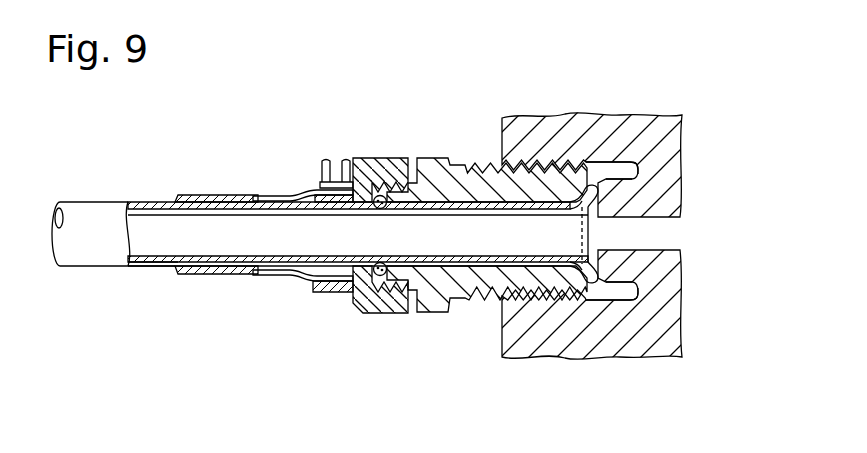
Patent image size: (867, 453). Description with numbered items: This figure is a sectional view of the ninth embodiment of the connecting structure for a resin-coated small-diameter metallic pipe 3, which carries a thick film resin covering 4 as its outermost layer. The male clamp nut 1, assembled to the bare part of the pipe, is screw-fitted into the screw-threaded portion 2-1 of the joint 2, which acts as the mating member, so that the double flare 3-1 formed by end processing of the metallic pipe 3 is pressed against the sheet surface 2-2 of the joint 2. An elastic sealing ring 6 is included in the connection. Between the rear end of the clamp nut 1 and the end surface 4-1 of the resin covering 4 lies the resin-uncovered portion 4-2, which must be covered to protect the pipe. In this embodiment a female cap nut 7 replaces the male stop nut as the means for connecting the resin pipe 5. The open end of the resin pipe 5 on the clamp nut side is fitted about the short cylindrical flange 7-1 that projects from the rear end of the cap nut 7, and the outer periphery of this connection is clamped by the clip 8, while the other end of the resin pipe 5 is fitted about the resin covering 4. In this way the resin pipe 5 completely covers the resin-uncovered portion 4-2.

The clamp nut 1 is at (440, 158).
The joint 2 is at (603, 118).
The screw-threaded portion 2-1 is at (626, 160).
The sheet surface 2-2 is at (645, 178).
The resin-coated small-diameter metallic pipe 3 is at (104, 202).
The double flare 3-1 is at (603, 290).
The thick film resin covering 4 is at (150, 276).
The end surface of the resin-coated layer 4-1 is at (242, 196).
The resin-uncovered portion 4-2 is at (292, 281).
The resin pipe 5 is at (258, 281).
The elastic sealing ring 6 is at (380, 278).
The cap nut 7 is at (375, 158).
The short cylindrical flange 7-1 is at (300, 195).
The clip 8 is at (326, 165).